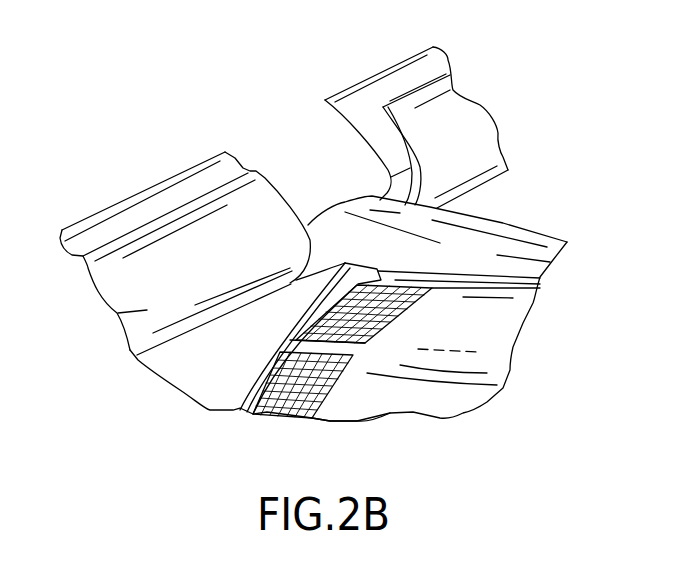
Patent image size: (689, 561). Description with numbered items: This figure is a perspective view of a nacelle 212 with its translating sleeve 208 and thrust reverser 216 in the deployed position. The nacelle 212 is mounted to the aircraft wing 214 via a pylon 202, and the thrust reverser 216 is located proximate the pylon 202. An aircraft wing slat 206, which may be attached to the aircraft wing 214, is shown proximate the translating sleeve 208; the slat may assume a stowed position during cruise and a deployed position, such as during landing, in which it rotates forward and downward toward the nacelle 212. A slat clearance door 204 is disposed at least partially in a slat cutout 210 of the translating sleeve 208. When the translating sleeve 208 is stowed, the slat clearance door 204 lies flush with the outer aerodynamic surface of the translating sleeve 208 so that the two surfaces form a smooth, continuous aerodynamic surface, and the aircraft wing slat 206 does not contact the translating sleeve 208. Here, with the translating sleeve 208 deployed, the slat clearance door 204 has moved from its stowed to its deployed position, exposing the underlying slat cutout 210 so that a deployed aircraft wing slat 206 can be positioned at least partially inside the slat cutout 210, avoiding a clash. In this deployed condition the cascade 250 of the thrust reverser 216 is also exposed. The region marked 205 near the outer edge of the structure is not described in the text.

The pylon 202 is at (487, 218).
The slat clearance door 204 is at (283, 290).
The platform edge region 205 is at (477, 352).
The aircraft wing slat 206 is at (117, 313).
The translating sleeve 208 is at (223, 385).
The slat cutout 210 is at (317, 278).
The nacelle 212 is at (357, 396).
The aircraft wing 214 is at (310, 112).
The thrust reverser 216 is at (203, 368).
The cascade 250 is at (387, 313).